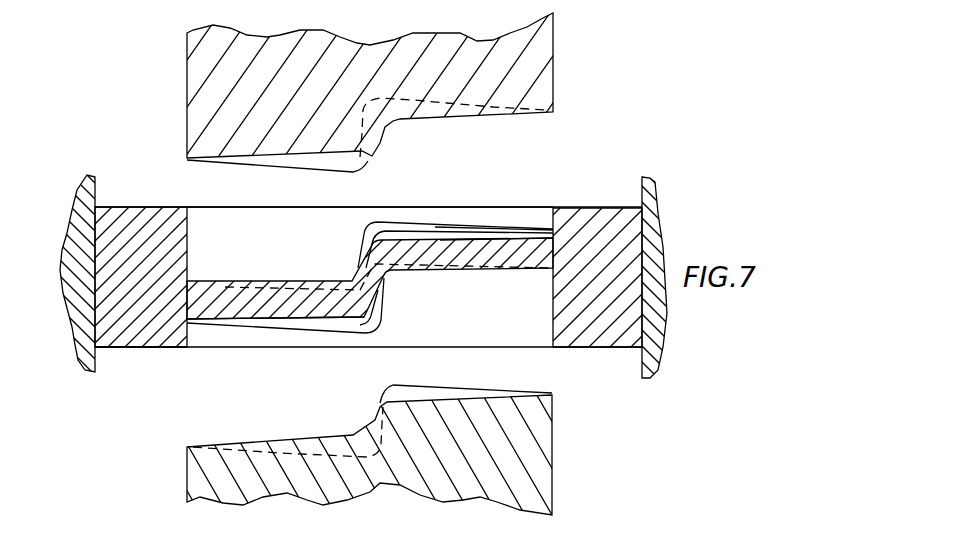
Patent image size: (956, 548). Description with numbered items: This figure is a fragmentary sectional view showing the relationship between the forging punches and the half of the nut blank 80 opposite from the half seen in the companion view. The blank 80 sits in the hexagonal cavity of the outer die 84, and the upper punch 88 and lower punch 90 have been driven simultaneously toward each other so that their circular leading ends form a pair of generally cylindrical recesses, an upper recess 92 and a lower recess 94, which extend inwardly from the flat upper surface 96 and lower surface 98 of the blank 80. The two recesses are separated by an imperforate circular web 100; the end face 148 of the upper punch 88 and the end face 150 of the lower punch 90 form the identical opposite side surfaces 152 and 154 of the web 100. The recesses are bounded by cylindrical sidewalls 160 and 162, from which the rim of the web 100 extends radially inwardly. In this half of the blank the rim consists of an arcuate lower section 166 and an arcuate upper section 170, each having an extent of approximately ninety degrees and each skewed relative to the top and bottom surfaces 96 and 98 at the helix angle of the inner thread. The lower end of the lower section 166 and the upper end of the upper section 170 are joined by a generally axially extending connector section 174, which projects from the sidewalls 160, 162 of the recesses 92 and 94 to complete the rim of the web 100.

The blank 80 is at (110, 195).
The outer die 84 is at (70, 245).
The upper punch 88 is at (547, 62).
The lower punch 90 is at (555, 460).
The upper circular recess 92 is at (210, 205).
The lower circular recess 94 is at (331, 341).
The upper surface of the blank 96 is at (595, 208).
The lower surface of the blank 98 is at (602, 348).
The circular web 100 is at (479, 228).
The end face of upper punch 148 is at (320, 163).
The end face of lower punch 150 is at (450, 390).
The upper side surface of the web 152 is at (372, 232).
The lower side surface of the web 154 is at (368, 306).
The cylindrical sidewall of upper recess 160 is at (190, 248).
The cylindrical sidewall of lower recess 162 is at (192, 334).
The arcuate lower rim section 166 is at (272, 327).
The arcuate upper rim section 170 is at (435, 226).
The axially extending connector section 174 is at (368, 262).